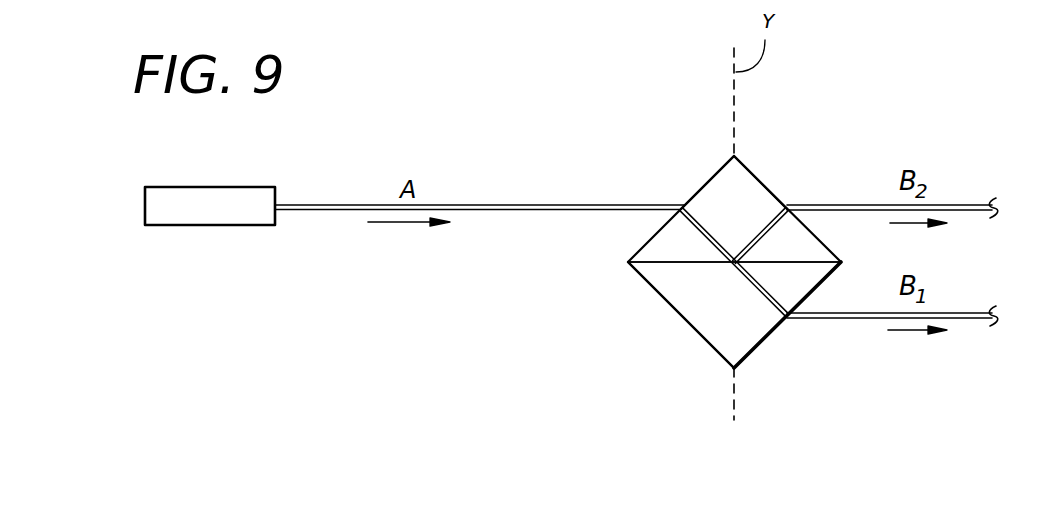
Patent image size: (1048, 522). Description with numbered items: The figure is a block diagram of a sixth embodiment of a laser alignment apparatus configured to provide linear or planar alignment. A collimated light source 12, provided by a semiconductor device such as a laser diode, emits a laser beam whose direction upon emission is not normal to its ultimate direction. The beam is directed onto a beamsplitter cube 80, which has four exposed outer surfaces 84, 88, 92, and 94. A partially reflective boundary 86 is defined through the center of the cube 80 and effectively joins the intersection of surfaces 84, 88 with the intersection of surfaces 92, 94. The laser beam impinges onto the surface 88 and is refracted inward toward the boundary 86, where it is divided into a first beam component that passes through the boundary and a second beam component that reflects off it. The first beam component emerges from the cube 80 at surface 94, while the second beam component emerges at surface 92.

The collimated light source 12 is at (197, 226).
The beamsplitter cube 80 is at (650, 167).
The outer surface 84 is at (675, 310).
The partially reflective boundary 86 is at (680, 262).
The outer surface 88 is at (710, 173).
The outer surface 92 is at (760, 175).
The outer surface 94 is at (767, 336).